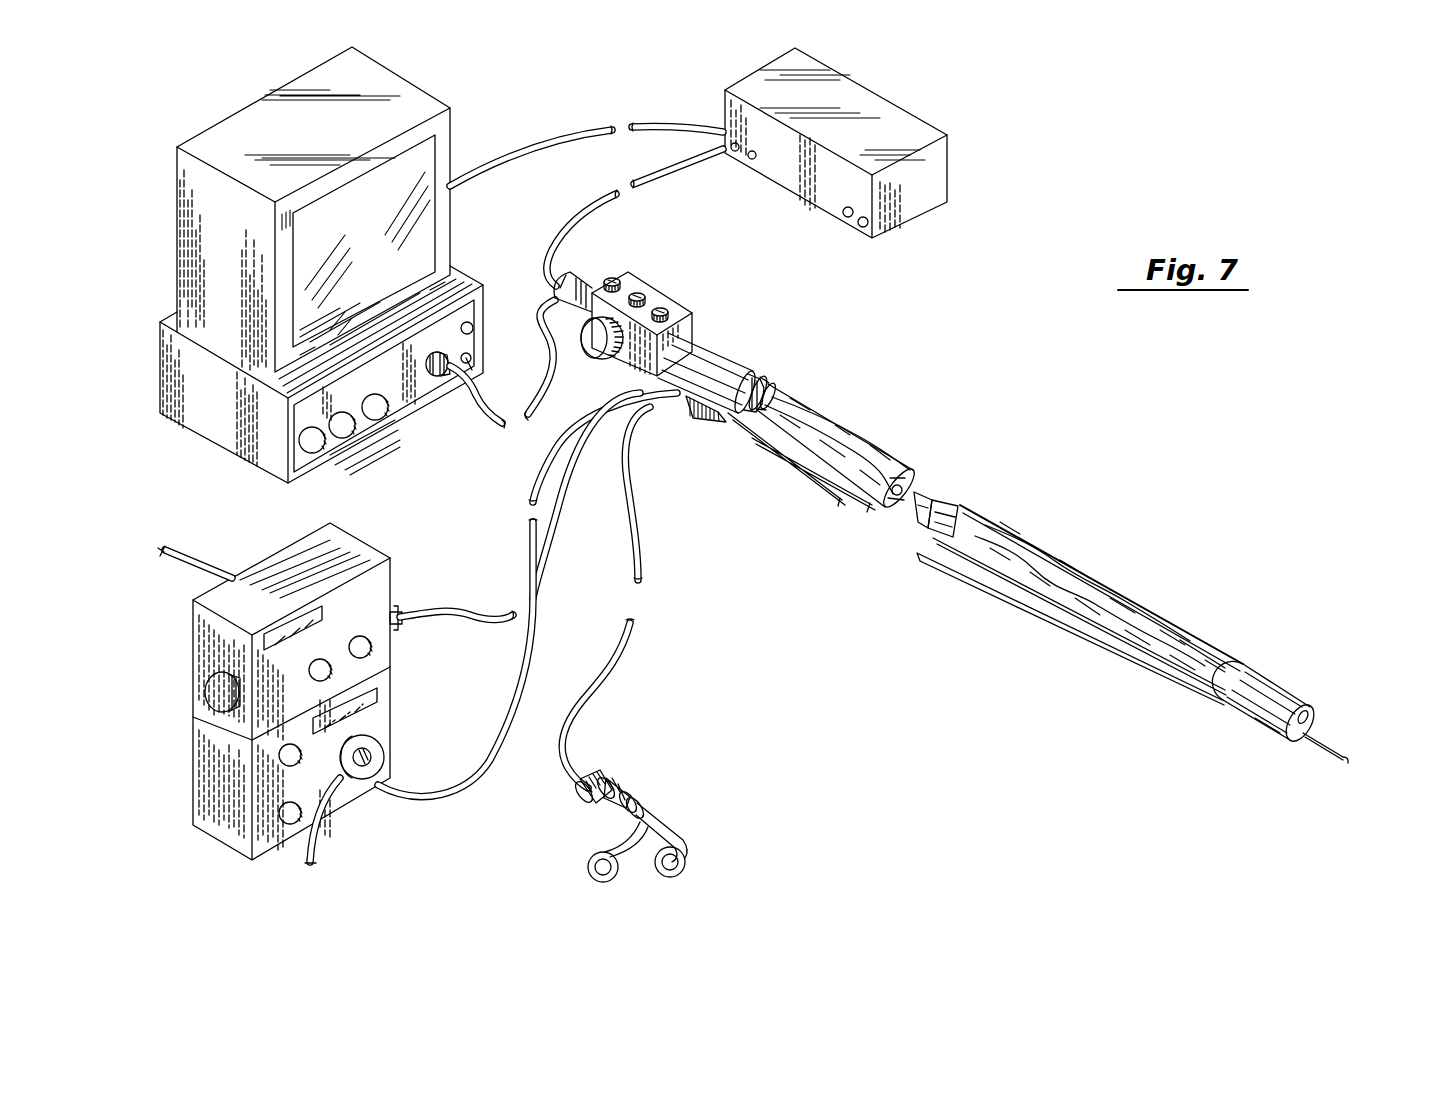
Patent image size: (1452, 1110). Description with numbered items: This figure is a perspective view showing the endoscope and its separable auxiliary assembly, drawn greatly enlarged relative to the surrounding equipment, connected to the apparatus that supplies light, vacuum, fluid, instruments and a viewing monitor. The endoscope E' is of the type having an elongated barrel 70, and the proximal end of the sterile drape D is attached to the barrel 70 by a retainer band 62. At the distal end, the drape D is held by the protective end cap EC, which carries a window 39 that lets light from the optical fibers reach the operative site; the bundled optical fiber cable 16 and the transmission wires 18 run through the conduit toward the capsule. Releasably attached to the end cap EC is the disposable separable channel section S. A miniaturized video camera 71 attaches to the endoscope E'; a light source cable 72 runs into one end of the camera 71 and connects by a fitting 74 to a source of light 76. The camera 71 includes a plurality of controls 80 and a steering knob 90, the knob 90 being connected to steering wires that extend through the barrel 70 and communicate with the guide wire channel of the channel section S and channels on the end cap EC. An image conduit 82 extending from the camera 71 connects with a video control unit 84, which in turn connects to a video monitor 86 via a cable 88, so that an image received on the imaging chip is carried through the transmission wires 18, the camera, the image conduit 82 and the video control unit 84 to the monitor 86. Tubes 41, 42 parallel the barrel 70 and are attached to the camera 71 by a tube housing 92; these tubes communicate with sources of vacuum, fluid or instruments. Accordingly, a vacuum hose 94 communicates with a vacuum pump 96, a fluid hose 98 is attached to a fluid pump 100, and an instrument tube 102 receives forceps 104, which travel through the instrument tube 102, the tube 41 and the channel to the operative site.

The bundled optical fiber cable 16 is at (953, 507).
The transmission wires 18 is at (930, 503).
The window 39 is at (1310, 713).
The tube 41 is at (933, 538).
The tube 42 is at (938, 570).
The retainer band 62 is at (770, 382).
The elongated barrel 70 is at (851, 437).
The miniaturized video camera 71 is at (657, 309).
The light source cable 72 is at (490, 426).
The fitting 74 is at (428, 377).
The source of light 76 is at (232, 438).
The controls 80 is at (668, 308).
The image conduit 82 is at (652, 177).
The video control unit 84 is at (758, 82).
The video monitor 86 is at (377, 90).
The cable 88 is at (656, 127).
The steering knob 90 is at (590, 347).
The tube housing 92 is at (712, 412).
The vacuum hose 94 is at (458, 622).
The vacuum pump 96 is at (383, 557).
The fluid hose 98 is at (540, 657).
The fluid pump 100 is at (373, 720).
The instrument tube 102 is at (630, 660).
The forceps 104 is at (673, 840).
The drape D is at (1028, 588).
The endoscope E' is at (1230, 589).
The end cap EC is at (1308, 657).
The separable channel section S is at (1263, 733).